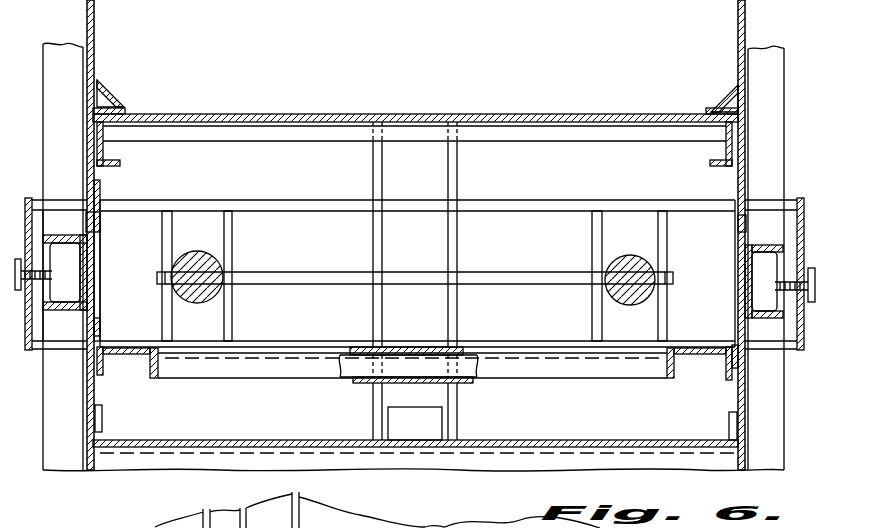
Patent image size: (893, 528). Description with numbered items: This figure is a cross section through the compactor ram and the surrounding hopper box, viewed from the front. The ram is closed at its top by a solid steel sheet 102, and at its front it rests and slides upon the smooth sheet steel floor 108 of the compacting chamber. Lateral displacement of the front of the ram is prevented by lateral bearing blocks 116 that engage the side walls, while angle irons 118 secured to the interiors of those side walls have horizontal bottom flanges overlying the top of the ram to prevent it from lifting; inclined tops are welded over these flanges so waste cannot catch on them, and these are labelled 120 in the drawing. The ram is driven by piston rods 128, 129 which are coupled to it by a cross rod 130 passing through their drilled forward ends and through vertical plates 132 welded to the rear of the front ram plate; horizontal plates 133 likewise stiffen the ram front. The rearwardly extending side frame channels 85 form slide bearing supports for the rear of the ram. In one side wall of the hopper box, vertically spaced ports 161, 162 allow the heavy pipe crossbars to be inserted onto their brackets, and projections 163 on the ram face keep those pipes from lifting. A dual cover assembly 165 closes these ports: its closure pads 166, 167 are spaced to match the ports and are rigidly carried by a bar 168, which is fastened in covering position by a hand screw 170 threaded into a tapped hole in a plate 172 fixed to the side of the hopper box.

The side frame channel 85 is at (748, 268).
The solid steel sheet 102 is at (528, 114).
The floor 108 is at (291, 439).
The lateral bearing block 116 is at (102, 420).
The angle iron 118 is at (126, 109).
The gusset bracket 120 is at (103, 87).
The piston rod 128 is at (621, 258).
The piston rod 129 is at (194, 256).
The cross rod 130 is at (488, 277).
The vertical plate 132 is at (234, 241).
The horizontal plate 133 is at (302, 198).
The port 161 is at (100, 313).
The port 162 is at (103, 186).
The projection 163 is at (427, 527).
The dual cover assembly 165 is at (804, 199).
The closure pad 166 is at (100, 331).
The closure pad 167 is at (93, 222).
The bar 168 is at (27, 199).
The hand screw 170 is at (33, 270).
The plate 172 is at (57, 289).